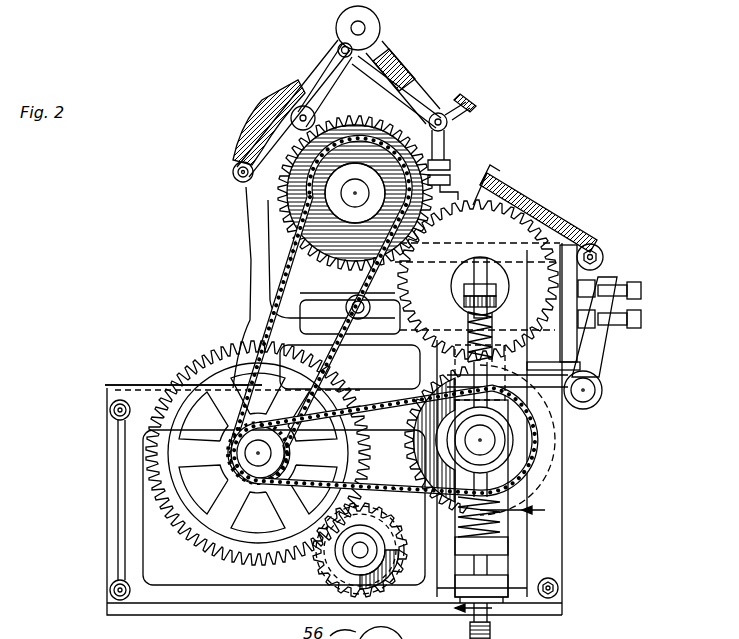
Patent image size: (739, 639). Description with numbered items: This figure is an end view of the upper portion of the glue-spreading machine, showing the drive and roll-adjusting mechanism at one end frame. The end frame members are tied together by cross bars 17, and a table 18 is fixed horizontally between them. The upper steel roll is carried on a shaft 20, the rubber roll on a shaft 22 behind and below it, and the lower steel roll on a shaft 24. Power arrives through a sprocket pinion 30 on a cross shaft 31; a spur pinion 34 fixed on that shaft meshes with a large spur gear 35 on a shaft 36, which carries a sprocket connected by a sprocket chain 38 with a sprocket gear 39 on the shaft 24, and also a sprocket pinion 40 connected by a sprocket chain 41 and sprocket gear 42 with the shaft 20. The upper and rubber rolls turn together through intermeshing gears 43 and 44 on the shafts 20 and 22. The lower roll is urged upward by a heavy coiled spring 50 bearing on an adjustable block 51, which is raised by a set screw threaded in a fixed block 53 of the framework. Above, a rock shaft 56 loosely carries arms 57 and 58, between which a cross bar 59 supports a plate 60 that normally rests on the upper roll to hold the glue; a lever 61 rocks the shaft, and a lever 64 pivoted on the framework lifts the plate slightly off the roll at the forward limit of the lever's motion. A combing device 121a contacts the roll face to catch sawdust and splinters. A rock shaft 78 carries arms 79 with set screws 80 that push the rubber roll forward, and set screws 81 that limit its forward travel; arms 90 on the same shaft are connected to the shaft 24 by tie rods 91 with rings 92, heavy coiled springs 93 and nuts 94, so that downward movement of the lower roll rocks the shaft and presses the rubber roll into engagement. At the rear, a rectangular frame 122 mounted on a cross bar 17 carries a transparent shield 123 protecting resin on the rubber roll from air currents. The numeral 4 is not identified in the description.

The direction arrows 4 is at (498, 561).
The cross bars 17 is at (232, 178).
The table 18 is at (146, 385).
The shaft 20 is at (355, 190).
The shaft 22 is at (488, 285).
The shaft 24 is at (488, 448).
The sprocket pinion 30 is at (326, 560).
The cross shaft 31 is at (363, 546).
The spur pinion 34 is at (332, 585).
The spur gear 35 is at (182, 498).
The shaft 36 is at (248, 453).
The sprocket chain 38 is at (396, 489).
The sprocket gear 39 is at (492, 444).
The sprocket pinion 40 is at (290, 451).
The sprocket chain 41 is at (350, 333).
The sprocket gear 42 is at (312, 216).
The gear 43 is at (316, 257).
The gear 44 is at (505, 230).
The coiled spring 50 is at (492, 518).
The adjustable block 51 is at (500, 546).
The fixed block 53 is at (500, 580).
The rock shaft 56 is at (366, 30).
The arm 57 is at (495, 635).
The arm 58 is at (415, 84).
The cross bar 59 is at (470, 122).
The plate 60 is at (455, 104).
The lever 61 is at (293, 108).
The lever 64 is at (350, 72).
The rock shaft 78 is at (604, 399).
The arm 79 is at (610, 358).
The set screw 80 is at (636, 282).
The set screw 81 is at (642, 318).
The arm 90 is at (572, 410).
The tie rod 91 is at (489, 292).
The ring 92 is at (418, 436).
The coiled spring 93 is at (470, 325).
The nut 94 is at (498, 310).
The combing device 121a is at (266, 122).
The rectangular frame 122 is at (550, 234).
The shield 123 is at (516, 185).